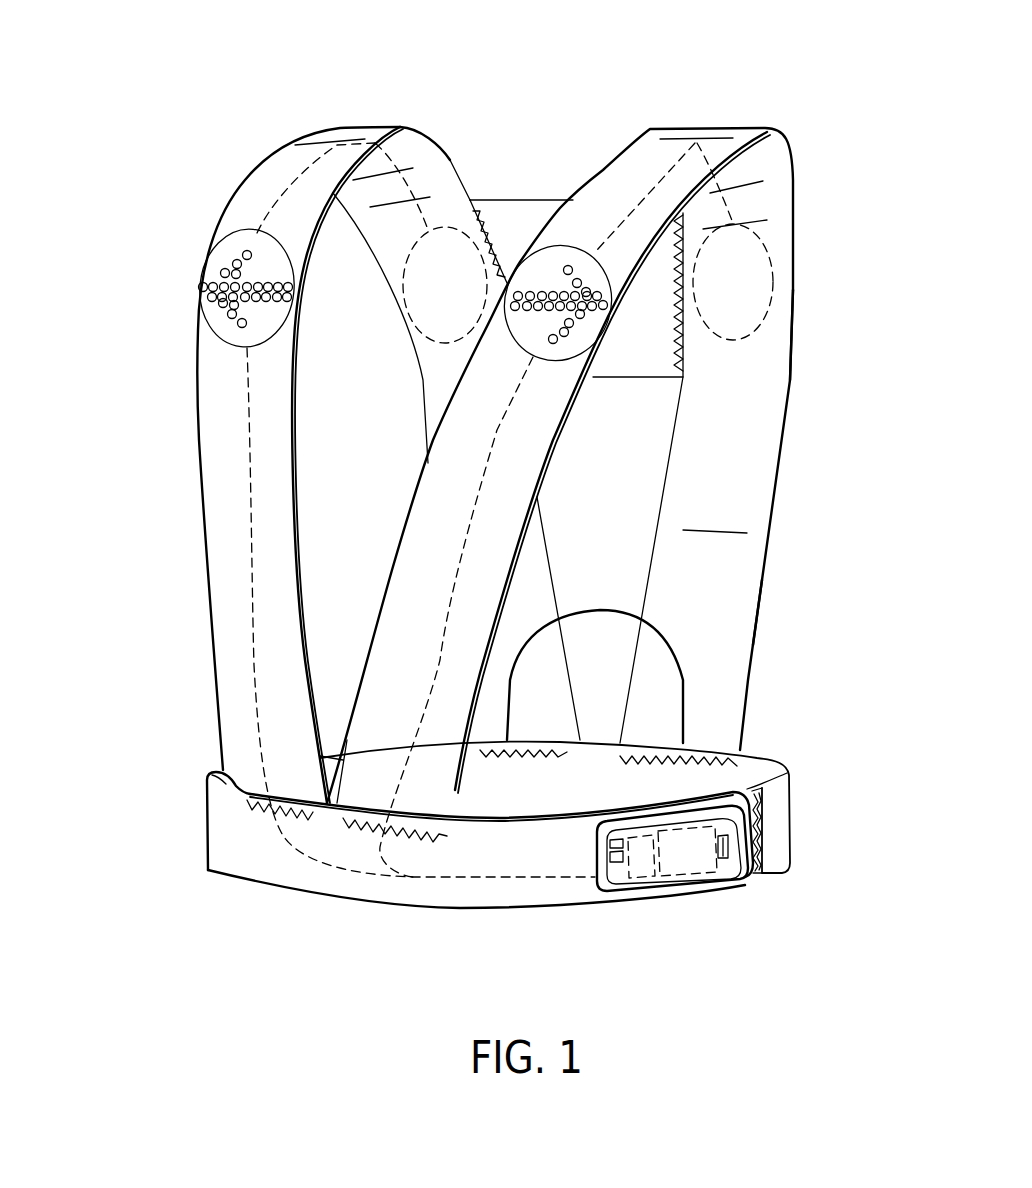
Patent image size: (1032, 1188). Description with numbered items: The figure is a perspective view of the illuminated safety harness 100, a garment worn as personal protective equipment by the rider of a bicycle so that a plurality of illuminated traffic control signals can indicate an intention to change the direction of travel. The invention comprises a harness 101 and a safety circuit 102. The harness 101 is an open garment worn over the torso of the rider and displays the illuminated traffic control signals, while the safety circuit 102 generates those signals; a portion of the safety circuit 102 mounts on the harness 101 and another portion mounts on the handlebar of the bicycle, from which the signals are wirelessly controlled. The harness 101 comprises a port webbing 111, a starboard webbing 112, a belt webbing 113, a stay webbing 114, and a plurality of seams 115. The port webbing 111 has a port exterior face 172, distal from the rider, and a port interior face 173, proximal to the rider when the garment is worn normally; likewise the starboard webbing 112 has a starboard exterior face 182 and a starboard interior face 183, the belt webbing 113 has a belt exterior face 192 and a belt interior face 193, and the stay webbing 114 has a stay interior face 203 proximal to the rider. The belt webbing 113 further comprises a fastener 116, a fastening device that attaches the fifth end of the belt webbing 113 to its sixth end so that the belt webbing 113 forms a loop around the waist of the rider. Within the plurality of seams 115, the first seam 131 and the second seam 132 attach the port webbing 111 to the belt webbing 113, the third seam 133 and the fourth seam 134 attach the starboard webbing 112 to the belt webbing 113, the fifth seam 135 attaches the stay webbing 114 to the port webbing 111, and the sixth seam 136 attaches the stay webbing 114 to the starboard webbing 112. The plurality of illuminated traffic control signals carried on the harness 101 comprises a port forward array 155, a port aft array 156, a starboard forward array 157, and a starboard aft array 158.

The illuminated safety harness 100 is at (185, 115).
The harness 101 is at (752, 655).
The safety circuit 102 is at (710, 868).
The port webbing 111 is at (748, 487).
The starboard webbing 112 is at (223, 427).
The belt webbing 113 is at (407, 907).
The stay webbing 114 is at (618, 367).
The plurality of seams 115 is at (637, 611).
The fastener 116 is at (755, 803).
The first seam 131 is at (705, 760).
The second seam 132 is at (422, 816).
The third seam 133 is at (545, 742).
The fourth seam 134 is at (233, 792).
The fifth seam 135 is at (687, 353).
The sixth seam 136 is at (507, 197).
The port forward array 155 is at (570, 257).
The port aft array 156 is at (748, 262).
The starboard forward array 157 is at (217, 323).
The starboard aft array 158 is at (440, 247).
The port exterior face 172 is at (497, 527).
The port interior face 173 is at (740, 550).
The starboard exterior face 182 is at (223, 662).
The starboard interior face 183 is at (430, 360).
The belt exterior face 192 is at (280, 880).
The belt interior face 193 is at (753, 770).
The stay interior face 203 is at (540, 222).